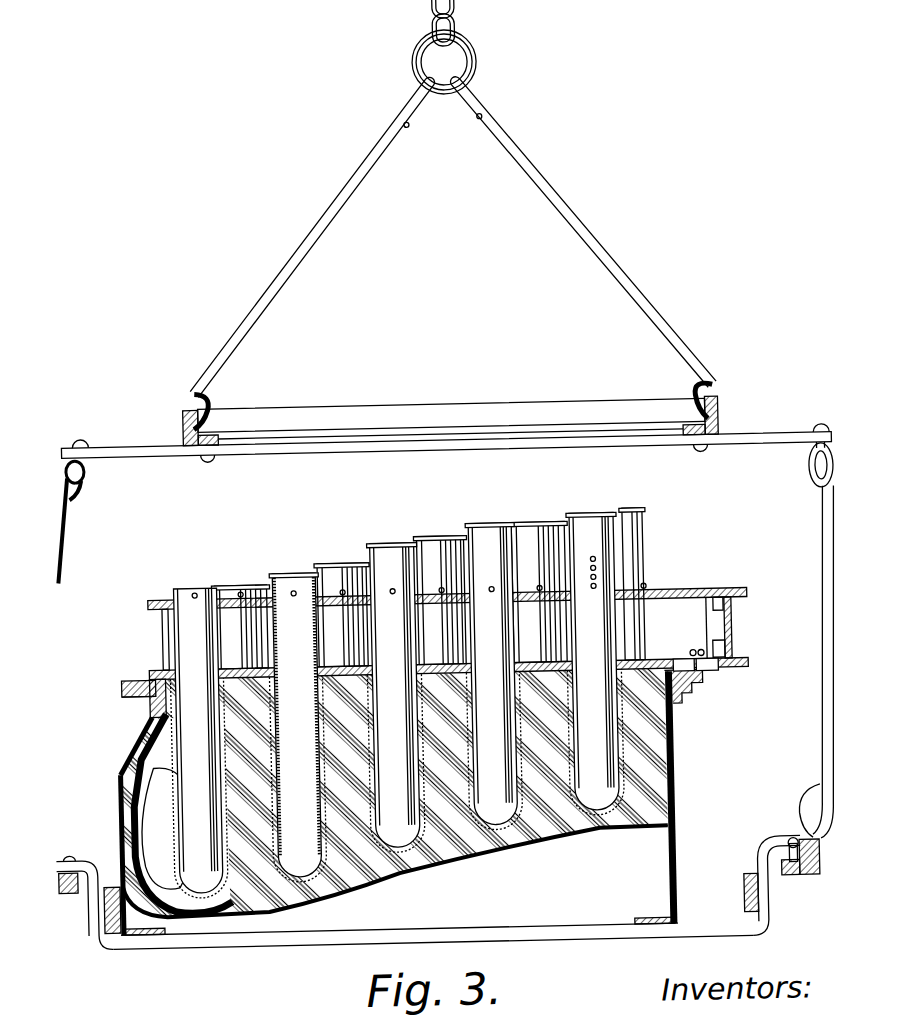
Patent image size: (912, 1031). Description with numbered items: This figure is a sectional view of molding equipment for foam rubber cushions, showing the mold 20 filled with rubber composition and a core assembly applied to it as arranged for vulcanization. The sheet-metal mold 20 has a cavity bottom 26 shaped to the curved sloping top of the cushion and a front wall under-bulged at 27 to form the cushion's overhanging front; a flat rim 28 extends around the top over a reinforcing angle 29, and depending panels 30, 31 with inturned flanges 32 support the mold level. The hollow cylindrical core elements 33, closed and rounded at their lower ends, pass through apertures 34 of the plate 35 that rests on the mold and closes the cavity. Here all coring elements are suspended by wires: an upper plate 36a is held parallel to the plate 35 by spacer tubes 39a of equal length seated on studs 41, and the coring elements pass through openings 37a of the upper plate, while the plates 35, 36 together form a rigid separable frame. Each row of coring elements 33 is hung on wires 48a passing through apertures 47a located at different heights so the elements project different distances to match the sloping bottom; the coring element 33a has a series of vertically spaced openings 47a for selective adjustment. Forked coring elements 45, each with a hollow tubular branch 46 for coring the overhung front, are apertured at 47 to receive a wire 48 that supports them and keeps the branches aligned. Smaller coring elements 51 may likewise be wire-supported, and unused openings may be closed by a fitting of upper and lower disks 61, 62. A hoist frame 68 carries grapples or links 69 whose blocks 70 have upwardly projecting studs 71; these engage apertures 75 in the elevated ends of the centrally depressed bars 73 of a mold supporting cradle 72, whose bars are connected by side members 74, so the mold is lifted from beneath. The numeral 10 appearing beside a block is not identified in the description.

The apparatus 10 is at (817, 876).
The mold 20 is at (718, 795).
The bottom 26 is at (391, 796).
The under-bulged front wall 27 is at (113, 751).
The flat rim 28 is at (112, 686).
The reinforcing angle 29 is at (111, 707).
The depending panel 30 is at (175, 878).
The depending panel 31 is at (637, 854).
The inturned flanges 32 is at (400, 945).
The core elements 33 is at (398, 799).
The apertures 34 is at (448, 657).
The plate 35 is at (123, 686).
The plate 36 is at (473, 582).
The upper plate 36a is at (512, 648).
The openings 37a is at (402, 669).
The coring element 33a is at (609, 642).
The spacer tubes 39a is at (453, 633).
The studs 41 is at (749, 627).
The forked coring elements 45 is at (164, 814).
The hollow tubular branch 46 is at (135, 829).
The openings 47 is at (415, 589).
The apertures 47a is at (564, 540).
The wire 48 is at (207, 567).
The wires 48a is at (590, 532).
The coring elements 51 is at (740, 486).
The upper disk 61 is at (679, 640).
The lower disk 62 is at (726, 677).
The frame 68 is at (451, 396).
The grapples or links 69 is at (448, 658).
The blocks 70 is at (446, 893).
The studs 71 is at (776, 824).
The mold supporting cradle 72 is at (433, 969).
The centrally depressed bars 73 is at (400, 954).
The side members 74 is at (415, 920).
The apertures 75 is at (430, 885).